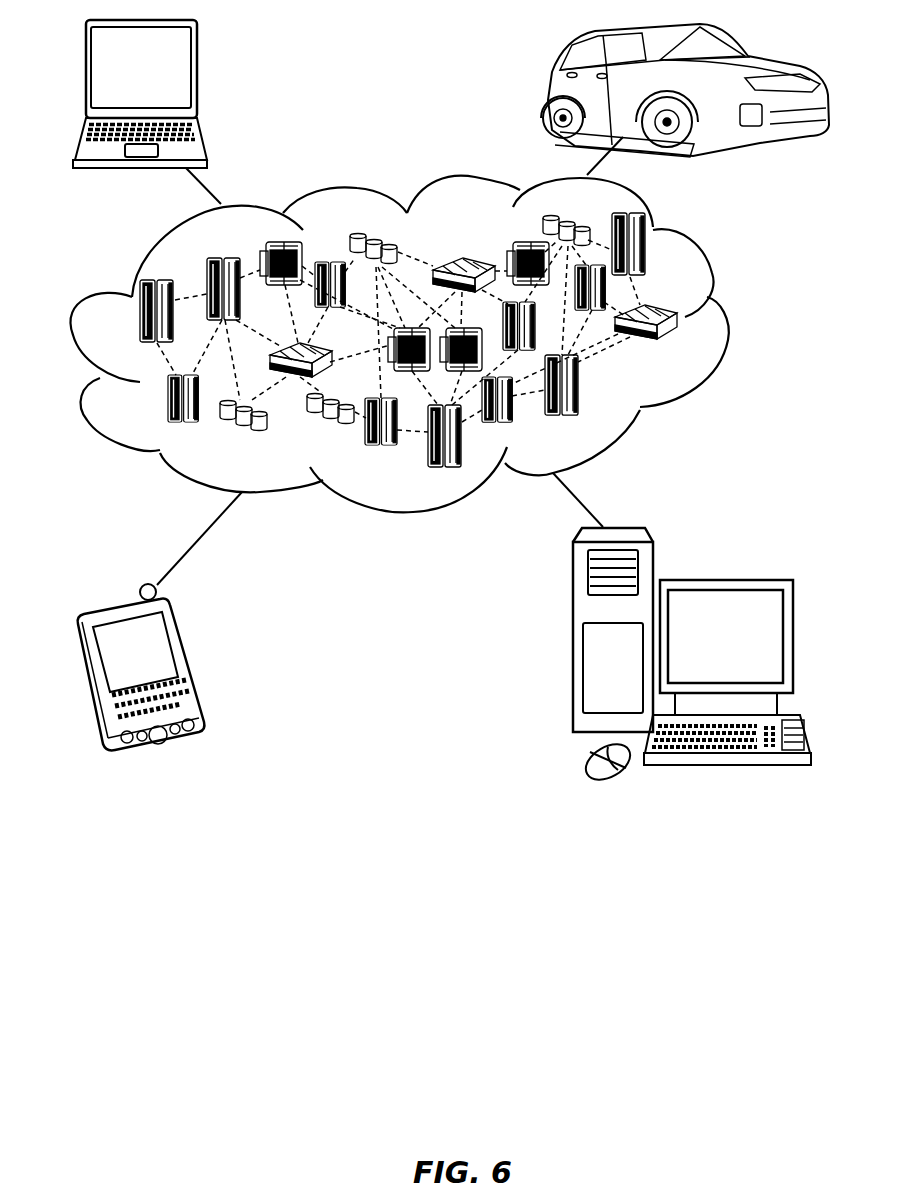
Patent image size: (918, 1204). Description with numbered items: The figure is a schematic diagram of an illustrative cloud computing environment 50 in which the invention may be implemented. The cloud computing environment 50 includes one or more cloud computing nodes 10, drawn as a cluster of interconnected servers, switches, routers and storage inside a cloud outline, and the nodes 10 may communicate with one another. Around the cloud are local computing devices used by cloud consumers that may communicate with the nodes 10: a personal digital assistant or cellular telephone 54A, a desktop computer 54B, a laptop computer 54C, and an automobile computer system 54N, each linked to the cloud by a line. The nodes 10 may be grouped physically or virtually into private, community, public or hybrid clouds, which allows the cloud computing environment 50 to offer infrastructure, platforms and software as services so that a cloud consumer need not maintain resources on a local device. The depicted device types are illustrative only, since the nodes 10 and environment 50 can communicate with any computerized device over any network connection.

The cloud computing nodes 10 is at (676, 351).
The cloud computing environment 50 is at (727, 318).
The personal digital assistant (PDA) or cellular telephone 54A is at (187, 657).
The desktop computer 54B is at (723, 578).
The laptop computer 54C is at (197, 77).
The automobile computer system 54N is at (548, 92).